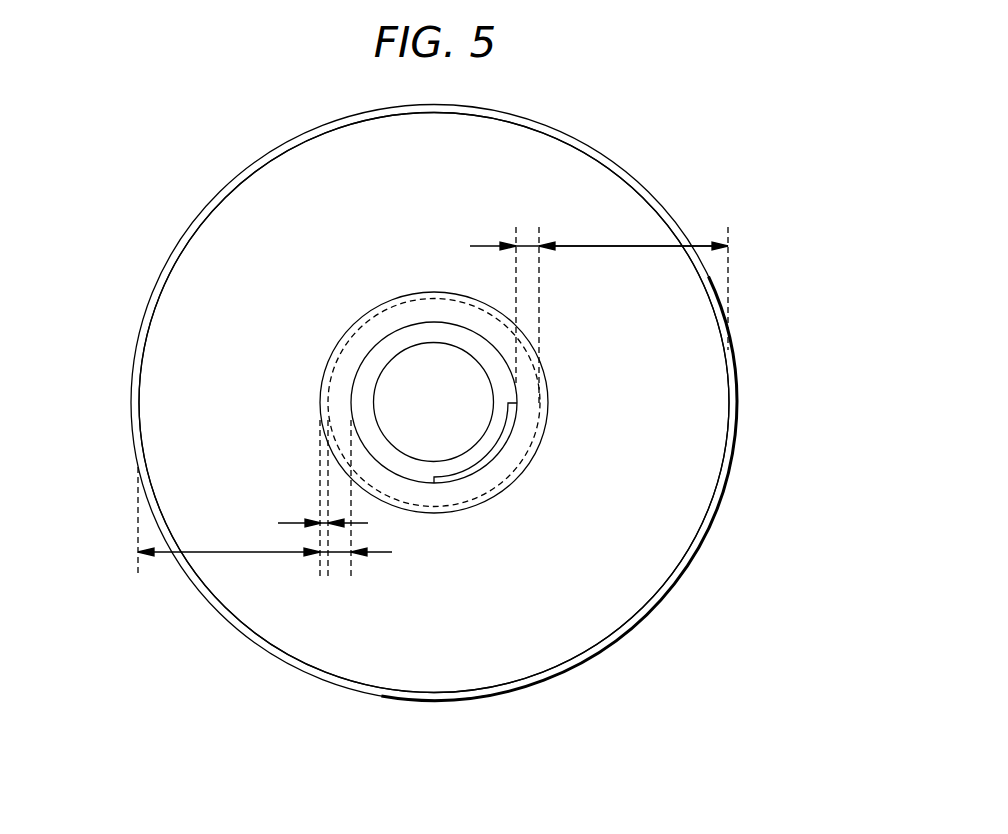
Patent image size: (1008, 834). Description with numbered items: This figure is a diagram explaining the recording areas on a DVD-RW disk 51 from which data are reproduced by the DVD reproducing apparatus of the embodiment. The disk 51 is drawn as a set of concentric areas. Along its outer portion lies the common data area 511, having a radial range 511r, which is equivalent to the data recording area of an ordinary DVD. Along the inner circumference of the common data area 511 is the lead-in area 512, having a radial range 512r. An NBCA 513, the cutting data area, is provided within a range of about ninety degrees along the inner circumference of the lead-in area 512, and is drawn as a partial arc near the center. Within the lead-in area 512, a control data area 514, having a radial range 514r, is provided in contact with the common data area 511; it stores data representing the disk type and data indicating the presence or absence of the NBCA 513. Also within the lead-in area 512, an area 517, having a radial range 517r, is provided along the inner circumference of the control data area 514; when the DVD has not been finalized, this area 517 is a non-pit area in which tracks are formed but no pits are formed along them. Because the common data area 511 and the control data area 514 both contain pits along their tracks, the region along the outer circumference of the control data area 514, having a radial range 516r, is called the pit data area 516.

The disk 51 is at (206, 199).
The common data area 511 is at (483, 643).
The lead-in area 512 is at (480, 485).
The NBCA 513 is at (487, 458).
The control data area 514 is at (322, 377).
The pit data area 516 is at (665, 400).
The area 517 is at (427, 303).
The radial range 511r is at (229, 525).
The radial range 512r is at (338, 553).
The radial range 514r is at (325, 522).
The radial range 516r is at (633, 288).
The radial range 517r is at (527, 246).